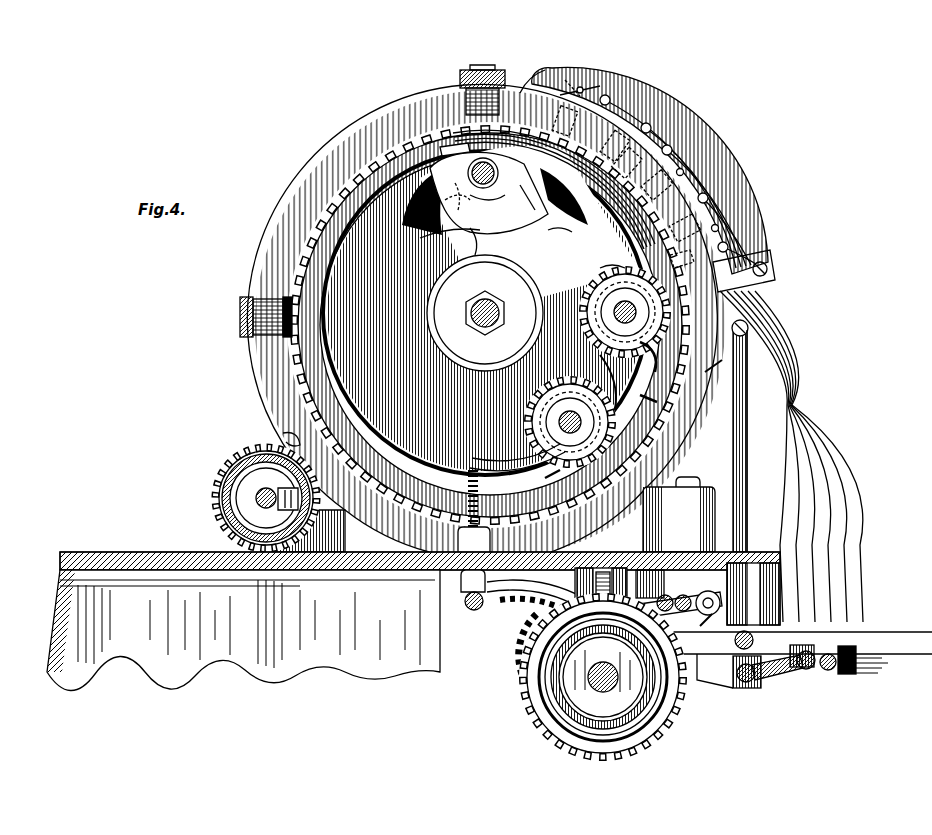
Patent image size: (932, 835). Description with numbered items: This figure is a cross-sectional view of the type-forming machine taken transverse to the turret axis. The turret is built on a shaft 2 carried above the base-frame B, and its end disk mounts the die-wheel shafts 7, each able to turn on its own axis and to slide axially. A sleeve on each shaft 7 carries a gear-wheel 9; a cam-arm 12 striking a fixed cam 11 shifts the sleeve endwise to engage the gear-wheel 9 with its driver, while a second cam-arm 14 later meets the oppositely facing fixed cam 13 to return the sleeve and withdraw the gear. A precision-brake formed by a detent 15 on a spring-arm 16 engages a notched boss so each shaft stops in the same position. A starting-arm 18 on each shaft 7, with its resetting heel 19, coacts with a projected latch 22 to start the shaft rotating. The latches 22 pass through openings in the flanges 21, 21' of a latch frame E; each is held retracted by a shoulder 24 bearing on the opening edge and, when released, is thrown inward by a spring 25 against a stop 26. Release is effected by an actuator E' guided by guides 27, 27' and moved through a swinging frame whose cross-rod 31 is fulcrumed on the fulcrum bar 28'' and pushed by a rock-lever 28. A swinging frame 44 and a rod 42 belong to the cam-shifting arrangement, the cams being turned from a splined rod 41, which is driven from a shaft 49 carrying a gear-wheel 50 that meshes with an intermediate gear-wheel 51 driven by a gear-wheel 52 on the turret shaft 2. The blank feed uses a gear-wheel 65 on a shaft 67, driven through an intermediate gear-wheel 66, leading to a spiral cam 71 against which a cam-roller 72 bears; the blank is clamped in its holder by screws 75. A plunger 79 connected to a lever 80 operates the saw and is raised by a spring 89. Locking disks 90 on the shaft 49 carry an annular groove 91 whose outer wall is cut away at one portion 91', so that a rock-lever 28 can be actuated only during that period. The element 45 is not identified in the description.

The shaft 2 is at (500, 310).
The die-wheel shaft 7 is at (660, 318).
The gear-wheel 9 is at (440, 150).
The fixed actuating cam 11 is at (530, 198).
The cam-arm 12 is at (640, 414).
The returning cam 13 is at (307, 340).
The cam-arm 14 is at (489, 192).
The detent 15 is at (556, 478).
The spring-arm 16 is at (682, 262).
The starting-arm 18 is at (735, 285).
The resetting heel 19 is at (655, 428).
The flange 21 is at (554, 189).
The flange 21' is at (628, 76).
The latch 22 is at (612, 97).
The shoulder 24 is at (614, 168).
The spring 25 is at (599, 149).
The stop 26 is at (642, 184).
The guide 27 is at (690, 155).
The guide 27' is at (712, 174).
The rock-lever 28 is at (746, 630).
The fulcrum bar 28'' is at (715, 693).
The cross-rod 31 is at (881, 668).
The splined rod 41 is at (520, 606).
The rod 42 is at (733, 446).
The swinging frame 44 is at (655, 600).
The post 45 is at (748, 546).
The shaft 49 is at (598, 676).
The gear-wheel 50 is at (548, 712).
The intermediate gear-wheel 51 is at (530, 600).
The gear-wheel 52 is at (768, 688).
The gear-wheel 65 is at (222, 493).
The shaft 67 is at (257, 503).
The intermediate gear-wheel 66 is at (284, 434).
The cam 71 is at (488, 207).
The cam-roller 72 is at (447, 196).
The screws 75 is at (478, 235).
The plunger 79 is at (517, 460).
The lever 80 is at (472, 610).
The spring 89 is at (484, 512).
The locking disk 90 is at (560, 724).
The annular groove 91 is at (517, 657).
The removed wall portion 91' is at (523, 649).
The base-frame B is at (413, 621).
The latch frame E is at (650, 166).
The actuator E' is at (791, 456).